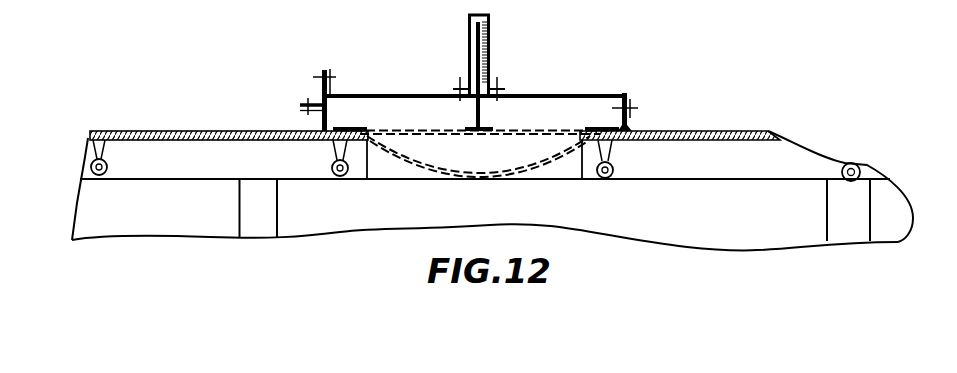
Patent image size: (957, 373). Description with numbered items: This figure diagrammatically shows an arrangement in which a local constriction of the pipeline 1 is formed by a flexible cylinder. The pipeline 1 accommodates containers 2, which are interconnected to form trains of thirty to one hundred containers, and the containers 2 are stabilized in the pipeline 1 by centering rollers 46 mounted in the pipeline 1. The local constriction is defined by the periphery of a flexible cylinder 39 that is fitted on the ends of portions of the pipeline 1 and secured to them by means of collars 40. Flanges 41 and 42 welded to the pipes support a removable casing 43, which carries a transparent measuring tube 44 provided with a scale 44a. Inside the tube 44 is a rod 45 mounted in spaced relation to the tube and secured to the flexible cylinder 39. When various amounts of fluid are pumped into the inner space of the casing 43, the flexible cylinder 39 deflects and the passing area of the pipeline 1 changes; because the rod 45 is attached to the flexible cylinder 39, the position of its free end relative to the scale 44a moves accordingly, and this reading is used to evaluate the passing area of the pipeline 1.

The pipeline 1 is at (700, 132).
The container 2 is at (785, 197).
The flexible cylinder 39 is at (522, 127).
The collar 40 is at (342, 127).
The flange 41 is at (322, 77).
The flange 42 is at (630, 108).
The removable casing 43 is at (575, 93).
The transparent measuring tube 44 is at (468, 27).
The scale 44a is at (488, 38).
The rod 45 is at (477, 72).
The centering roller 46 is at (856, 163).